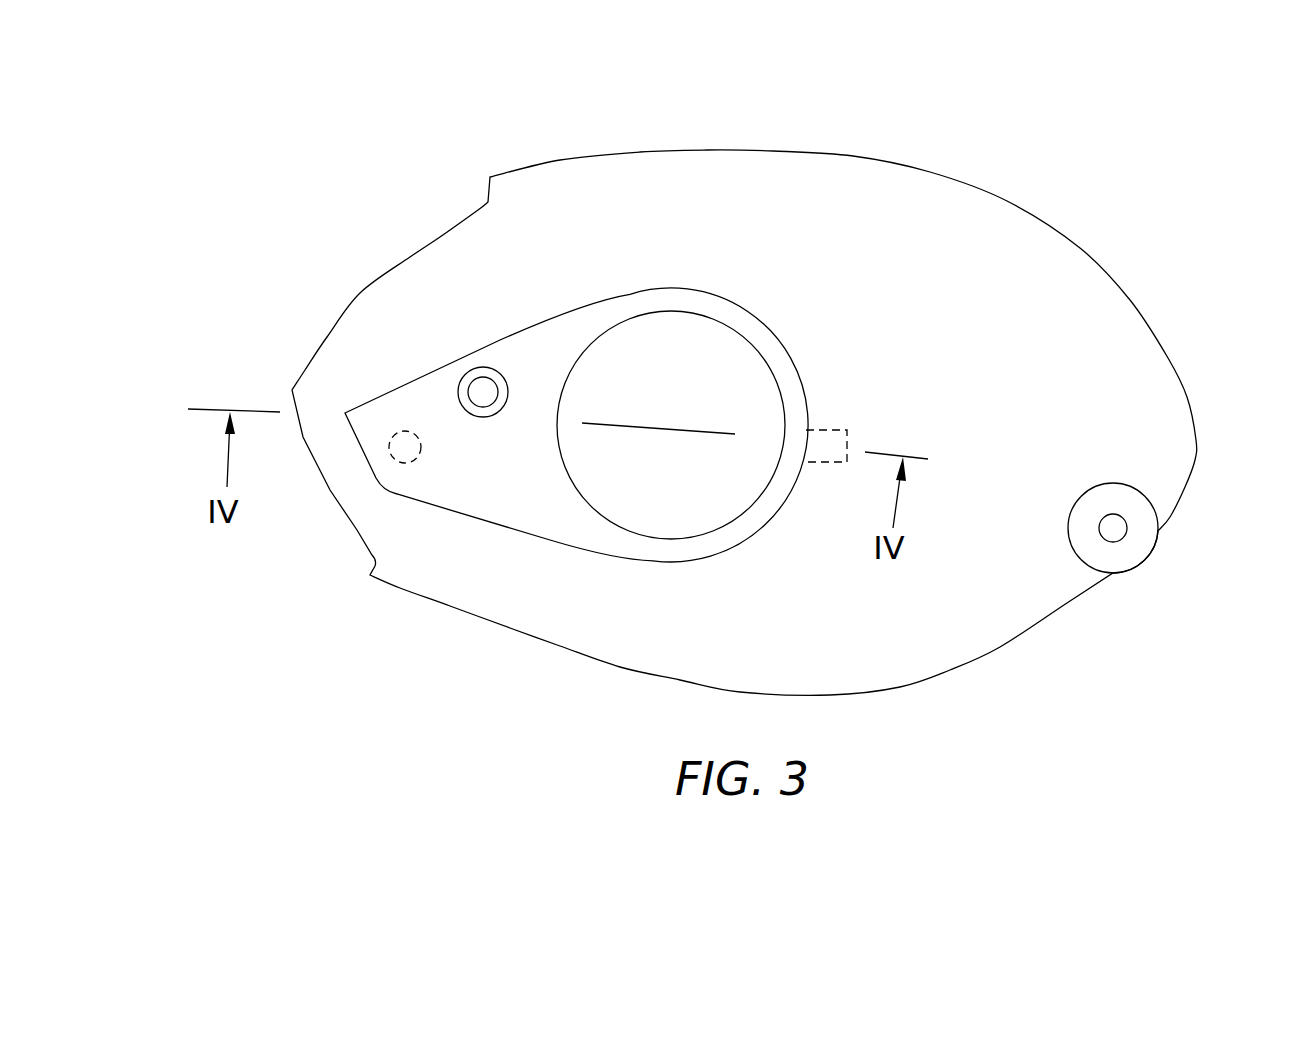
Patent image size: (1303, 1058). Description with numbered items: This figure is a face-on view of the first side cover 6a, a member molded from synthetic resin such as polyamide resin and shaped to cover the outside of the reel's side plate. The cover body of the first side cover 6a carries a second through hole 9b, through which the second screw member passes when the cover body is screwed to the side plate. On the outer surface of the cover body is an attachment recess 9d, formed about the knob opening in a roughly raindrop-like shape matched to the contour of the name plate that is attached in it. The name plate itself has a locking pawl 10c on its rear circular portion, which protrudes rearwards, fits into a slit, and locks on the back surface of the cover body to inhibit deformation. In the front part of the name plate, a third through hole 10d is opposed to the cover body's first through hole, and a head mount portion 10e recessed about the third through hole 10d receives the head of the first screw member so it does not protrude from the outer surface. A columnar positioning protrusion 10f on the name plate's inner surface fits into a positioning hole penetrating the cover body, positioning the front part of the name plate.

The first side cover 6a is at (1106, 231).
The second through hole 9b is at (1113, 528).
The attachment recess 9d is at (530, 335).
The locking pawl 10c is at (828, 430).
The third through hole 10d is at (468, 392).
The head mount portion 10e is at (478, 373).
The positioning protrusion 10f is at (404, 431).